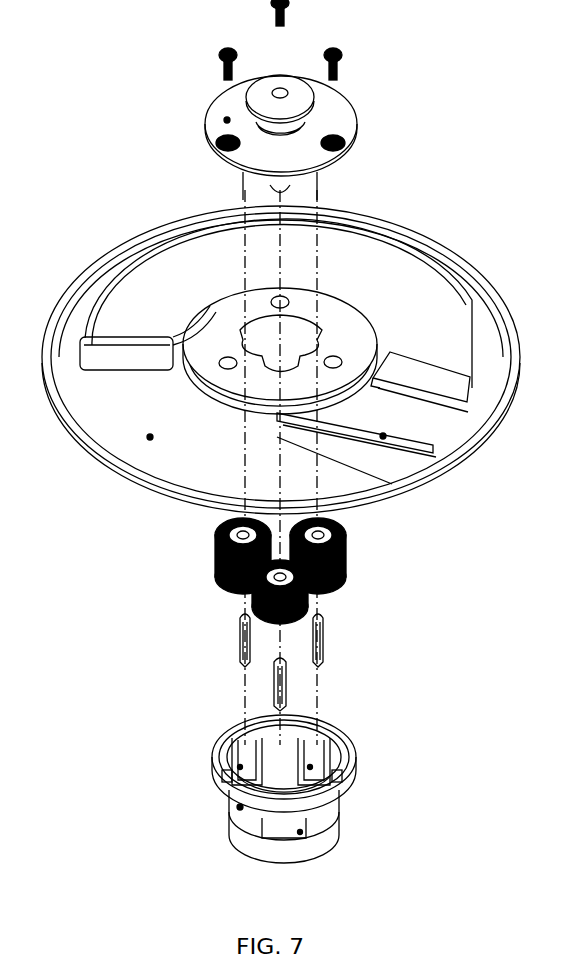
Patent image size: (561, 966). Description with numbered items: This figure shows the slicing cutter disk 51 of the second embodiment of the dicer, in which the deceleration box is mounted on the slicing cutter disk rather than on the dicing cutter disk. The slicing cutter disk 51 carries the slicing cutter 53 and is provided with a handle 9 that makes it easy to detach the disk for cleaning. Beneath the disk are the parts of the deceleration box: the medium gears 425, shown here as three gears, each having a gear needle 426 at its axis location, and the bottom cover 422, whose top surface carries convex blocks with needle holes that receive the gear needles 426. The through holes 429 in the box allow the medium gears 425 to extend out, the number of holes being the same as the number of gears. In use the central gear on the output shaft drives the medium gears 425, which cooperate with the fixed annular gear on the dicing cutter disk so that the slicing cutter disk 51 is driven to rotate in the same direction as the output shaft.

The handle 9 is at (227, 120).
The slicing cutter disk 51 is at (150, 437).
The slicing cutter 53 is at (383, 436).
The medium gears 425 is at (219, 551).
The gear needle 426 is at (240, 645).
The bottom cover 422 is at (240, 807).
The through holes 429 is at (240, 767).